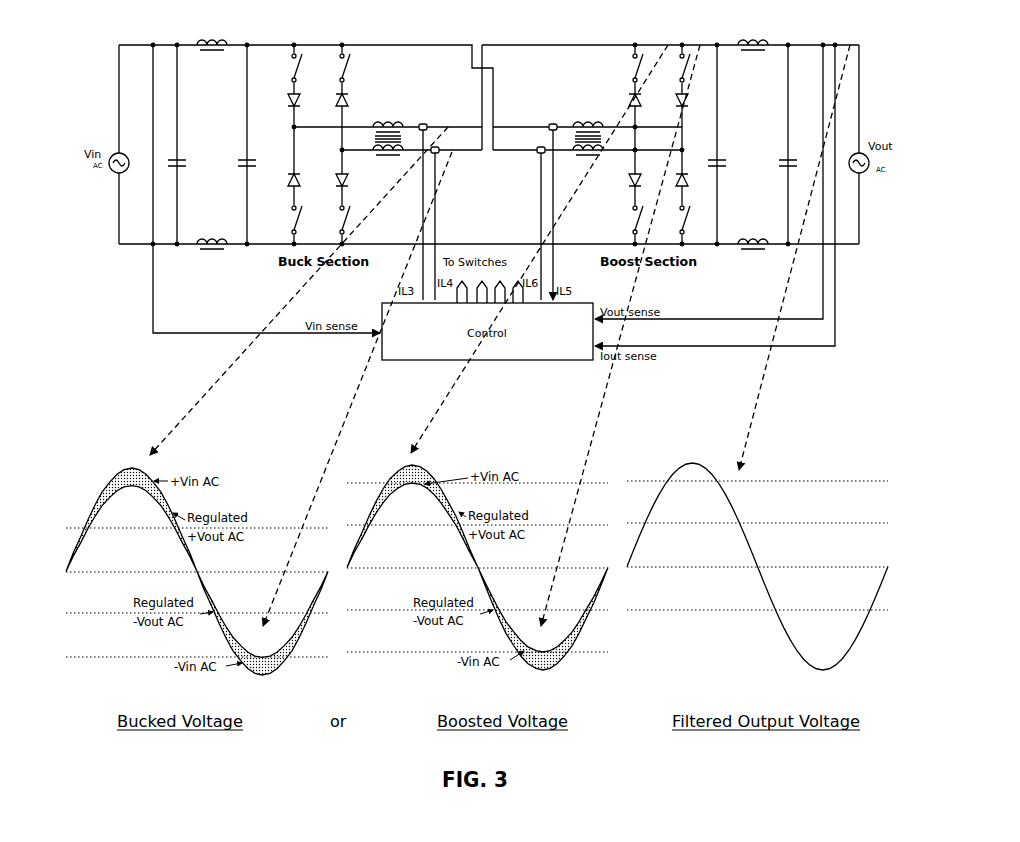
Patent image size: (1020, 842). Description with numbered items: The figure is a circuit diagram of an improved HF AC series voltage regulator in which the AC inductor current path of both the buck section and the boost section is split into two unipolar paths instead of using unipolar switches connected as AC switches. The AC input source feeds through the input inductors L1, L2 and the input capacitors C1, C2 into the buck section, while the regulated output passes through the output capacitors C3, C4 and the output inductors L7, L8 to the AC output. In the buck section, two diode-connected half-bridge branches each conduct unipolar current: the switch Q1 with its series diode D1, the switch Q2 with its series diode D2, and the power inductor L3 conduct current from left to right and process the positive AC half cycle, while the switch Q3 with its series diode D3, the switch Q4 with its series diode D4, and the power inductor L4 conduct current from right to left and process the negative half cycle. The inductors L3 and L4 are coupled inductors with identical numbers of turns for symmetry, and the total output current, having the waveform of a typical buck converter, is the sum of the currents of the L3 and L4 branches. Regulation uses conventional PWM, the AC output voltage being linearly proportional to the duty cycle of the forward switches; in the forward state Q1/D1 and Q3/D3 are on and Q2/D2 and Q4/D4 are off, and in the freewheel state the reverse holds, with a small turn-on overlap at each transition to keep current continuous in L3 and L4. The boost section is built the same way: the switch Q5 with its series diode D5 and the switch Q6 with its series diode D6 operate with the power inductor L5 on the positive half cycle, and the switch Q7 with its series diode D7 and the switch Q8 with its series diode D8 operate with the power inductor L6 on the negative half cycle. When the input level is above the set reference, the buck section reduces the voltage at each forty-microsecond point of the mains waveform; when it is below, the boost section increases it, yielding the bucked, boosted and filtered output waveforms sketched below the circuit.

The input inductor L1 is at (212, 55).
The input inductor L2 is at (212, 238).
The power inductor L3 is at (390, 120).
The power inductor L4 is at (389, 159).
The power inductor L5 is at (590, 120).
The power inductor L6 is at (589, 159).
The output inductor L7 is at (753, 55).
The output inductor L8 is at (753, 238).
The input capacitor C1 is at (183, 164).
The input capacitor C2 is at (231, 164).
The output capacitor C3 is at (727, 164).
The output capacitor C4 is at (777, 164).
The unipolar semiconductor switching device Q1 is at (287, 68).
The unipolar semiconductor switching device Q2 is at (287, 220).
The unipolar semiconductor switching device Q3 is at (334, 68).
The unipolar semiconductor switching device Q4 is at (334, 220).
The unipolar semiconductor switching device Q5 is at (628, 68).
The unipolar semiconductor switching device Q6 is at (628, 220).
The unipolar semiconductor switching device Q7 is at (675, 68).
The unipolar semiconductor switching device Q8 is at (693, 220).
The series diode D1 is at (283, 100).
The series diode D2 is at (283, 180).
The series diode D3 is at (331, 100).
The series diode D4 is at (331, 180).
The series diode D5 is at (624, 100).
The series diode D6 is at (625, 180).
The series diode D7 is at (670, 100).
The series diode D8 is at (691, 180).